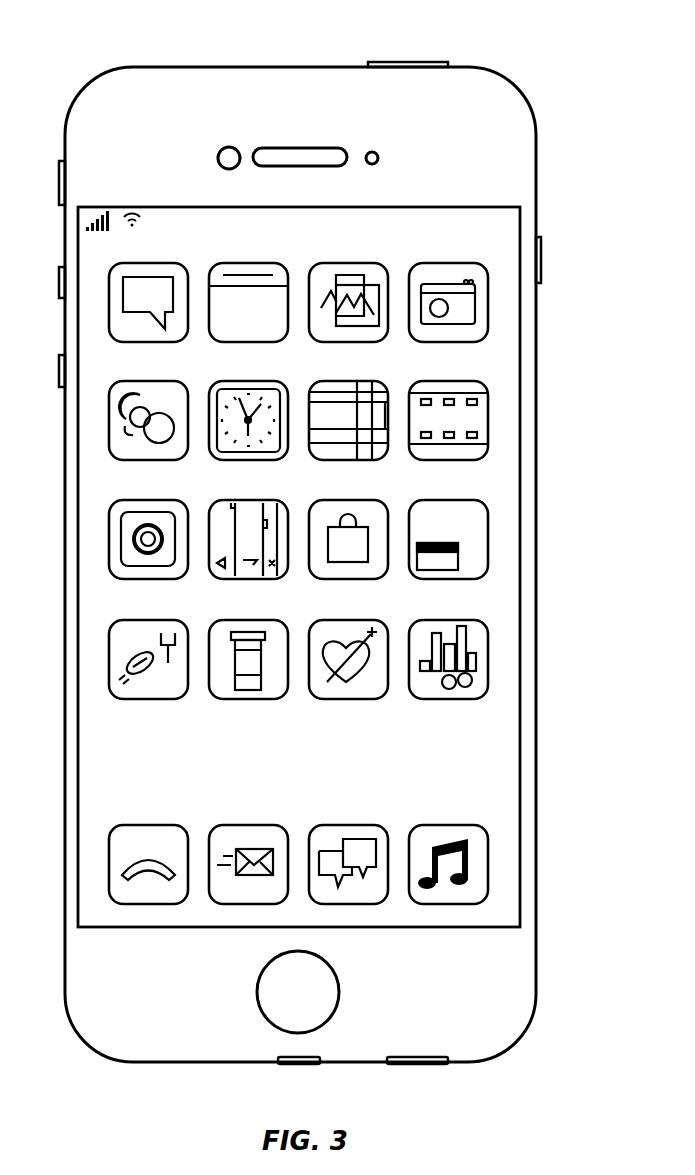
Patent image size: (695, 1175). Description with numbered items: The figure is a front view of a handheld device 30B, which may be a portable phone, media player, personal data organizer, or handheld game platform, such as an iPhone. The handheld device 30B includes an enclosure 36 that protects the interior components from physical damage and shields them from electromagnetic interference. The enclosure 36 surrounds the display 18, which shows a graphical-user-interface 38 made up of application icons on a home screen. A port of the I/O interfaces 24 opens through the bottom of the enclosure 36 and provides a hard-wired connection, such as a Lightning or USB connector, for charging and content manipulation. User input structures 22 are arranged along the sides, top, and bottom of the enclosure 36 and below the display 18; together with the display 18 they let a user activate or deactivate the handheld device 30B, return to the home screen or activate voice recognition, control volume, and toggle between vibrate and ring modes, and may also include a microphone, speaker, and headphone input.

The handheld device 30B is at (302, 558).
The enclosure 36 is at (540, 157).
The display 18 is at (523, 613).
The graphical-user-interface 38 is at (502, 229).
The user input structures 22 is at (410, 61).
The I/O interfaces 24 is at (299, 1066).